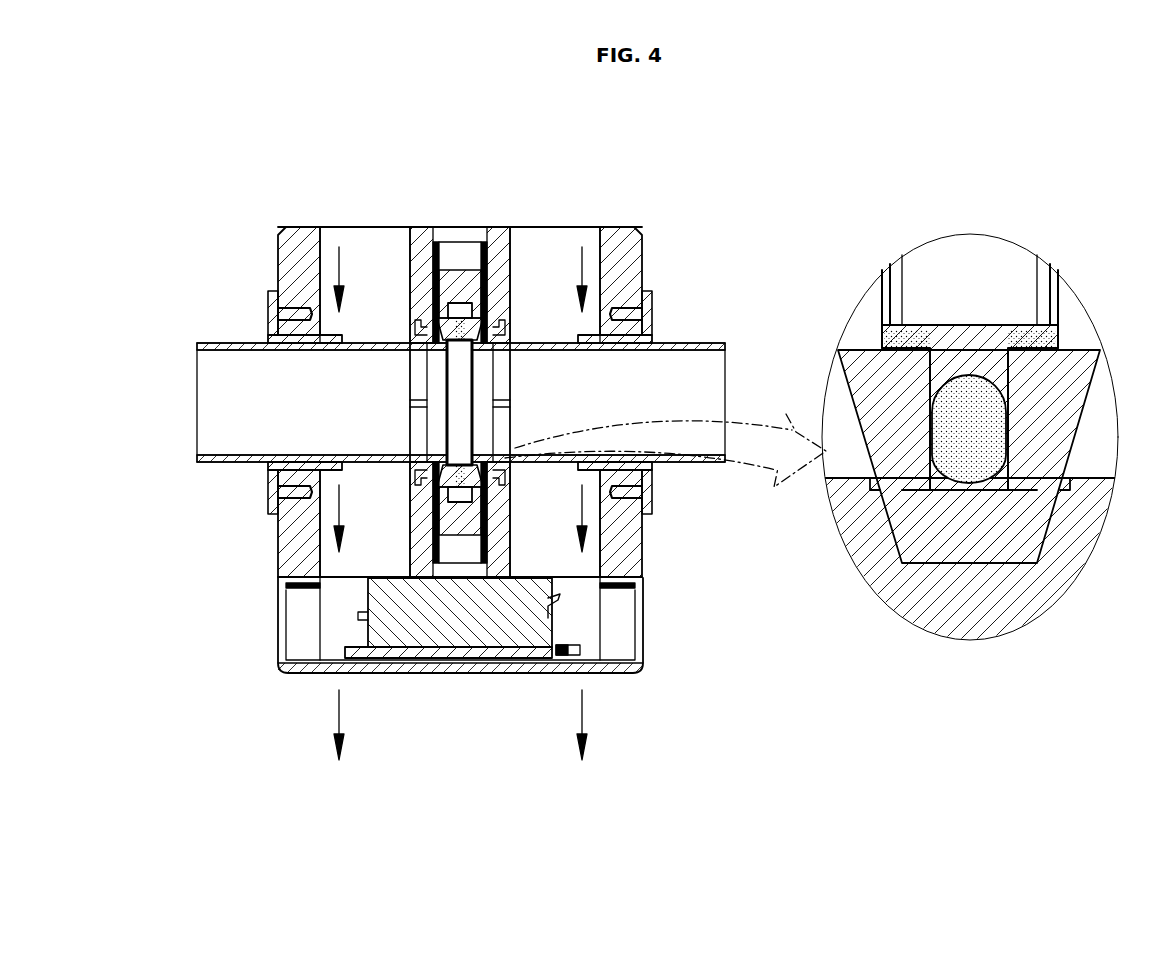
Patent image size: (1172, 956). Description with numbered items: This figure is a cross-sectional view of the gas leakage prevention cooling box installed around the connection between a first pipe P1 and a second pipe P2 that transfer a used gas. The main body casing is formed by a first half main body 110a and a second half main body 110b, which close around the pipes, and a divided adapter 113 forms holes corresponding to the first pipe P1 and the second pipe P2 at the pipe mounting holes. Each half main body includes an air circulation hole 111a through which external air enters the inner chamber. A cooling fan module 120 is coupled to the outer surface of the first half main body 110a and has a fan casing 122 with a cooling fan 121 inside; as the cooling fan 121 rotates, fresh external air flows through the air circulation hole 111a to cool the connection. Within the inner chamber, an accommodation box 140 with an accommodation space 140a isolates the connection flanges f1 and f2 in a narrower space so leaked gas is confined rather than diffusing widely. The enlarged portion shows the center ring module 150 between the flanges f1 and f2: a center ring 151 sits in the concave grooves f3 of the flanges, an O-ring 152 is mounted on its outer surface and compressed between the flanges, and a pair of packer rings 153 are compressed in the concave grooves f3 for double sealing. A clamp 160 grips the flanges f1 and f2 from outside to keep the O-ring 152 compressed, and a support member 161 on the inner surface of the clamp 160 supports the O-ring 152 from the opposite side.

The first half main body 110a is at (280, 526).
The second half main body 110b is at (292, 237).
The air circulation hole 111a is at (347, 238).
The divided adapter 113 is at (268, 328).
The cooling fan module 120 is at (380, 680).
The cooling fan 121 is at (504, 642).
The fan casing 122 is at (280, 604).
The accommodation box 140 is at (512, 265).
The accommodation space 140a is at (478, 260).
The center ring module 150 is at (447, 398).
The center ring 151 is at (1040, 272).
The O-ring 152 is at (1000, 430).
The packer ring 153 is at (1050, 338).
The clamp 160 is at (436, 245).
The support member 161 is at (976, 562).
The first pipe P1 is at (197, 458).
The second pipe P2 is at (700, 334).
The flange f1 is at (842, 364).
The flange f2 is at (1090, 378).
The concave groove f3 is at (1054, 302).